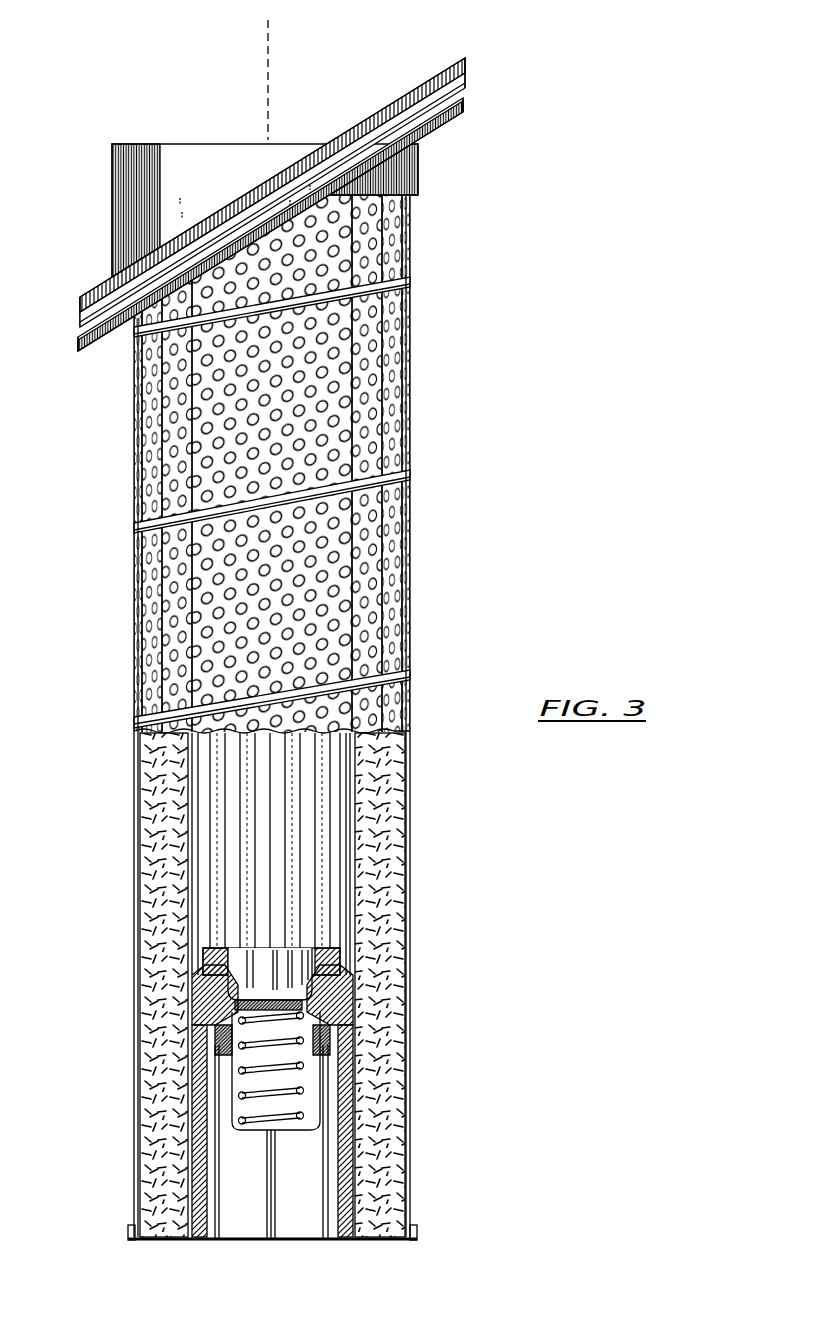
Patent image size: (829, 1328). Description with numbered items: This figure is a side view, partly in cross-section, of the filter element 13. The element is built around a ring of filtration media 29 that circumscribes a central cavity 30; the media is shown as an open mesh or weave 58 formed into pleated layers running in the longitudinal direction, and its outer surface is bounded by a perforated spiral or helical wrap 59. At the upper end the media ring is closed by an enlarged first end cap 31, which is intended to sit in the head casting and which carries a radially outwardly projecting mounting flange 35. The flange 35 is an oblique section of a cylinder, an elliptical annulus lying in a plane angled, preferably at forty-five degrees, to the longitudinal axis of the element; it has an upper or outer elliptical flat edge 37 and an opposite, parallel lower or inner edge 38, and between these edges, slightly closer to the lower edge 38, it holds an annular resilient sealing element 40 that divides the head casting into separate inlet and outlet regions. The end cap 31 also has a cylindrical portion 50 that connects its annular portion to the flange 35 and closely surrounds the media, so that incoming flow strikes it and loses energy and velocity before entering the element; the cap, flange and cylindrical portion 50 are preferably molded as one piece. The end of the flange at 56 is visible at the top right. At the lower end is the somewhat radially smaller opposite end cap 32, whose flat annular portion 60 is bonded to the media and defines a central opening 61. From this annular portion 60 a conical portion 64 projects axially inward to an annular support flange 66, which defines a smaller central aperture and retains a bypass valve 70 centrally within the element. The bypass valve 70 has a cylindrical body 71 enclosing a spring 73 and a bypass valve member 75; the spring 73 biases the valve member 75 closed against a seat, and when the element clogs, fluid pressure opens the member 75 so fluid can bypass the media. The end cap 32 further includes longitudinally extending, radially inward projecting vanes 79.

The filter element 13 is at (405, 470).
The filtration media 29 is at (137, 757).
The central cavity 30 is at (307, 838).
The first end cap 31 is at (112, 240).
The opposite end cap 32 is at (128, 1233).
The mounting flange 35 is at (457, 57).
The upper edge 37 is at (385, 105).
The lower edge 38 is at (443, 128).
The sealing element 40 is at (83, 328).
The cylindrical portion 50 is at (128, 185).
The plate edge 56 is at (468, 62).
The open mesh or weave 58 is at (395, 775).
The perforated spiral wrap 59 is at (388, 567).
The flat annular portion 60 is at (390, 1242).
The central opening 61 is at (297, 1242).
The conical portion 64 is at (343, 1138).
The annular support flange 66 is at (348, 977).
The bypass valve 70 is at (220, 1030).
The cylindrical body 71 is at (230, 1065).
The spring 73 is at (297, 1090).
The bypass valve member 75 is at (237, 1006).
The vanes 79 is at (270, 1228).